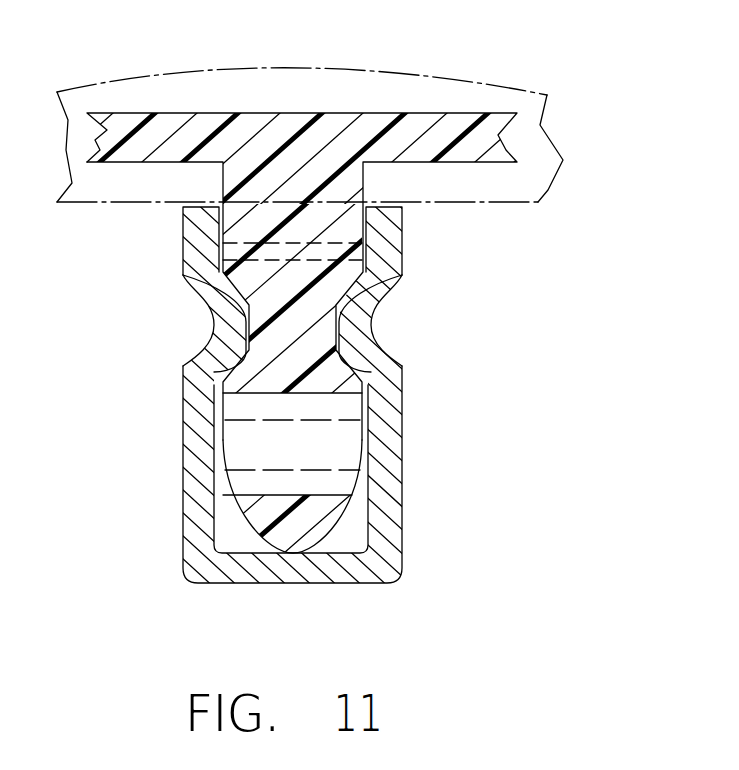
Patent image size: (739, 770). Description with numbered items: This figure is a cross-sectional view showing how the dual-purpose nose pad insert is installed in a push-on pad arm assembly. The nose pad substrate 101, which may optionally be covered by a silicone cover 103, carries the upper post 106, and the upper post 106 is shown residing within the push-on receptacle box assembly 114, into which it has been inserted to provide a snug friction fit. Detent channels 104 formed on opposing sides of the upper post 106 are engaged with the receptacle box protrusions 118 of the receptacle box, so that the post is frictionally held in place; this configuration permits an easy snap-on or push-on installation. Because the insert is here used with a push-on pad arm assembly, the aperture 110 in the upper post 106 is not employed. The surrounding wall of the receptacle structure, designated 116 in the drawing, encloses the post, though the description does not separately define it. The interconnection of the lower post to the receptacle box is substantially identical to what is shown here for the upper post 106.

The nose pad substrate 101 is at (442, 114).
The silicone cover 103 is at (322, 76).
The detent channels 104 is at (193, 297).
The upper post 106 is at (217, 530).
The aperture 110 is at (281, 496).
The push-on receptacle box assembly 114 is at (436, 460).
The socket housing 116 is at (400, 527).
The receptacle box protrusions 118 is at (192, 357).